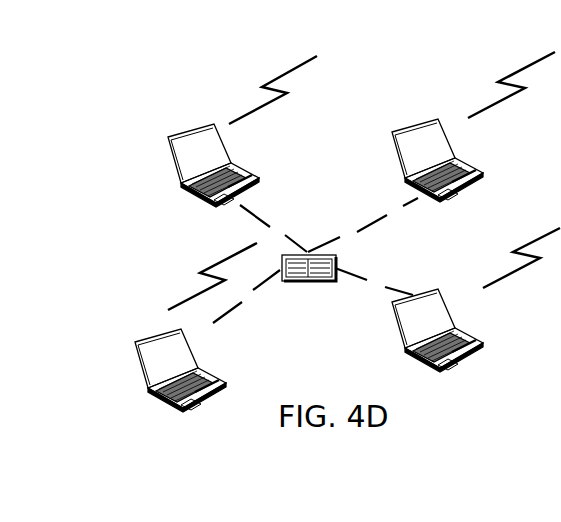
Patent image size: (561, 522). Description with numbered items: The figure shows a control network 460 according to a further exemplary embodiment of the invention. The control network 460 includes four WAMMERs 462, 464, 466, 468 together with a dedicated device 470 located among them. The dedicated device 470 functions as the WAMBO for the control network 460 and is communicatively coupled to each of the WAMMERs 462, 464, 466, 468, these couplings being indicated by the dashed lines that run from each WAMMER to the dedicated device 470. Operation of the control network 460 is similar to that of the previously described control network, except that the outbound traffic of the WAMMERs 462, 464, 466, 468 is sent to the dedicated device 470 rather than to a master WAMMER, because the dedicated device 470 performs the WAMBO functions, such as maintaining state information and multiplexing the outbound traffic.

The control network 460 is at (350, 81).
The WAMMER 462 is at (168, 136).
The WAMMER 464 is at (157, 333).
The WAMMER 466 is at (430, 119).
The WAMMER 468 is at (432, 287).
The dedicated device 470 is at (307, 283).